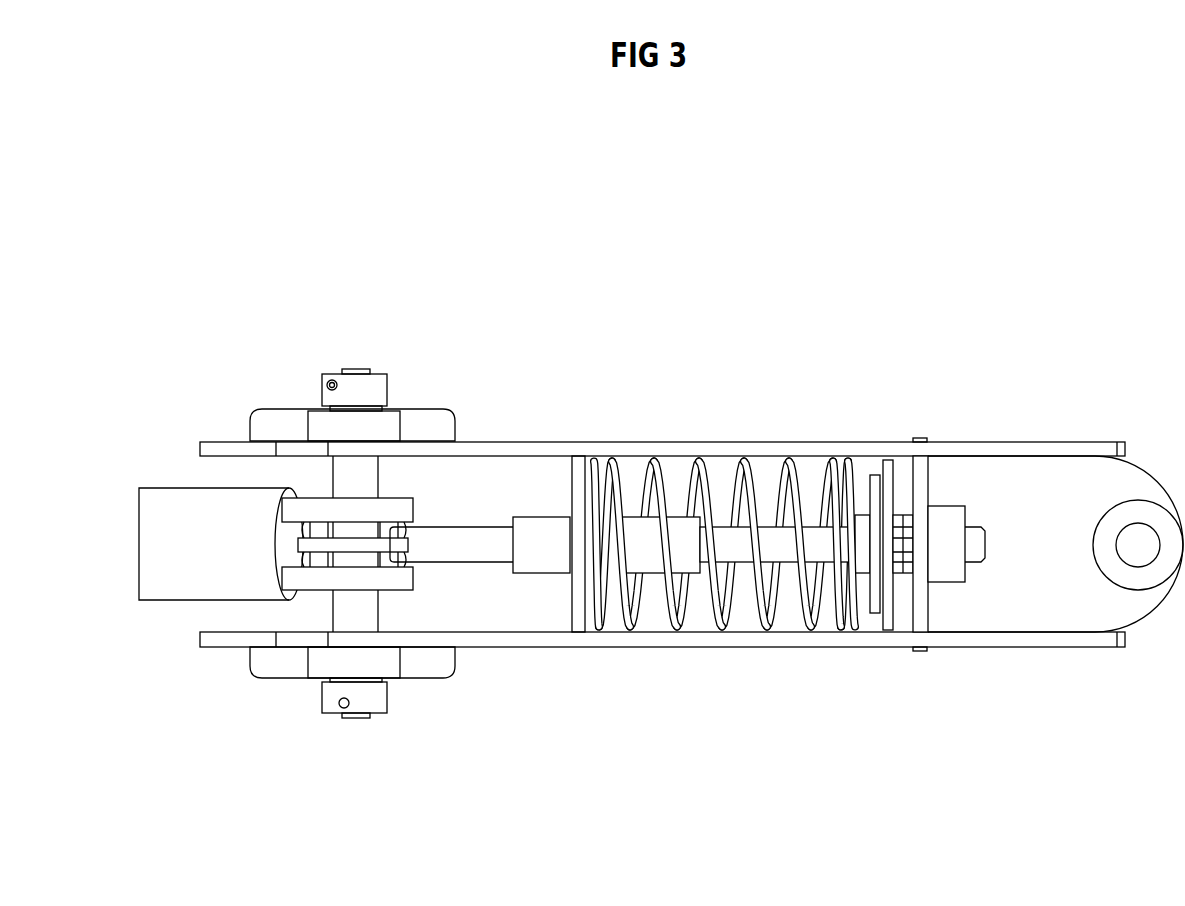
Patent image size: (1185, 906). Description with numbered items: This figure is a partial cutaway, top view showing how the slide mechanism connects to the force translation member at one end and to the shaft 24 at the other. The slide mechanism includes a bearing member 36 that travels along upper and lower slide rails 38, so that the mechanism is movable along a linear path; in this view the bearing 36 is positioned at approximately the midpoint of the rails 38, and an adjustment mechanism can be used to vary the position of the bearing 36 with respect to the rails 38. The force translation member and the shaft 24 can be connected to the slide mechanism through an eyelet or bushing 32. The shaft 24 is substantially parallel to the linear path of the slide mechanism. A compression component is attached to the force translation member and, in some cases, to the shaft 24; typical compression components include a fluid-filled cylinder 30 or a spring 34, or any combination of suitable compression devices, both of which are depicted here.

The shaft 24 is at (777, 543).
The fluid-filled cylinder 30 is at (163, 488).
The eyelet or bushing 32 is at (363, 555).
The spring 34 is at (723, 600).
The bearing member 36 is at (397, 407).
The slide rails 38 is at (450, 408).